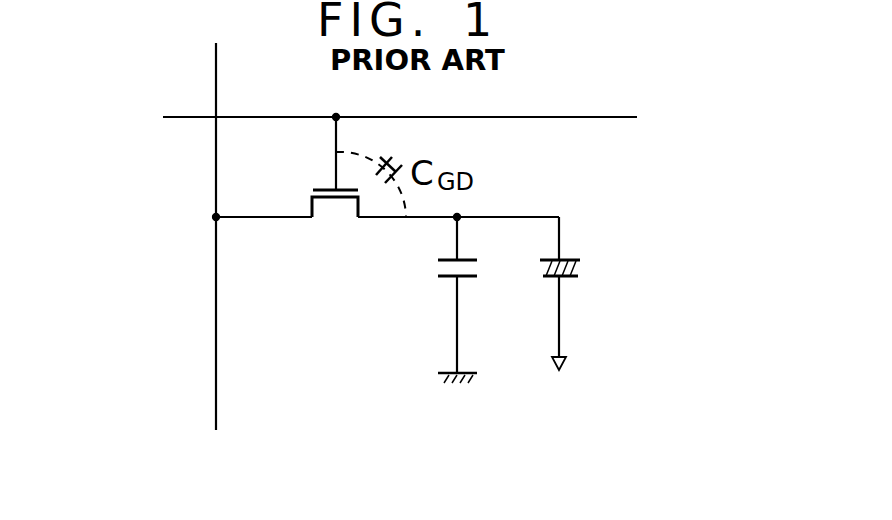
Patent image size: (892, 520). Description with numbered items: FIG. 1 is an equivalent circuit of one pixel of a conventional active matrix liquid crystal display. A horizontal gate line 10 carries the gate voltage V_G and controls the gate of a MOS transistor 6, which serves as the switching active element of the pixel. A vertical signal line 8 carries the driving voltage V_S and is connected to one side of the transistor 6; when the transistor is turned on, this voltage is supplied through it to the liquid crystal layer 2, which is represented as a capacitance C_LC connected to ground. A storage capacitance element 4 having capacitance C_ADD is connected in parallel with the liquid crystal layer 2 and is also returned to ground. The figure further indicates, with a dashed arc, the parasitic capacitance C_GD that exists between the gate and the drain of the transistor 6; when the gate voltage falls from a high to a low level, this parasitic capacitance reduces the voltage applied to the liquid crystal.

The gate line 10 is at (470, 117).
The signal line 8 is at (216, 350).
The MOS transistor 6 is at (322, 222).
The storage capacitance element 4 is at (448, 277).
The liquid crystal layer 2 is at (578, 258).